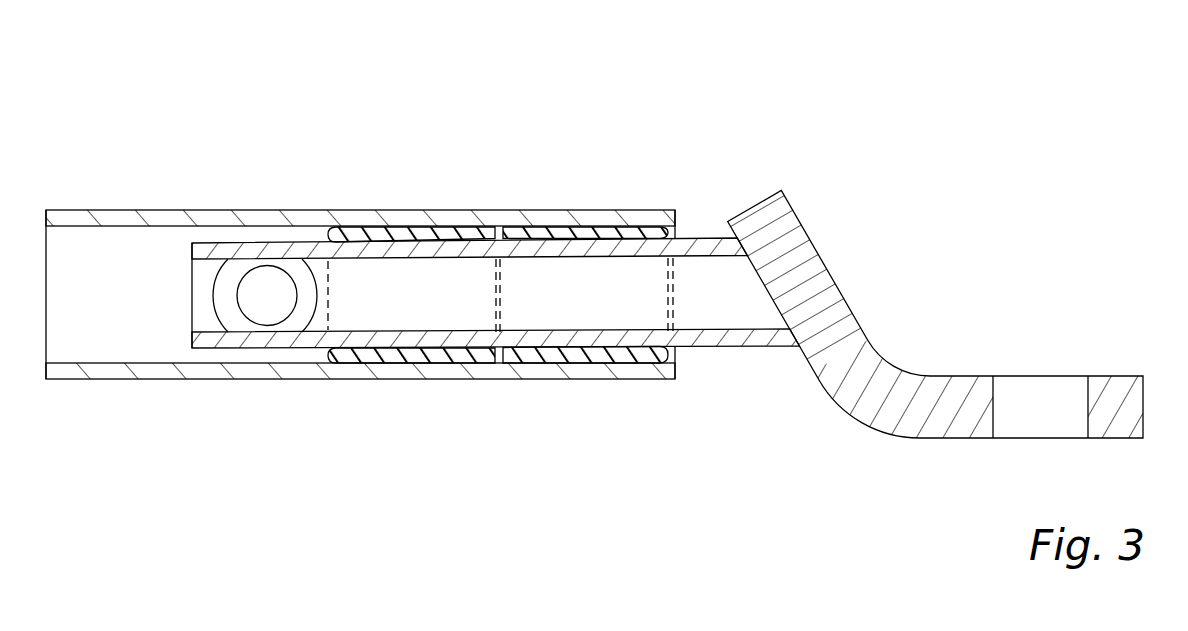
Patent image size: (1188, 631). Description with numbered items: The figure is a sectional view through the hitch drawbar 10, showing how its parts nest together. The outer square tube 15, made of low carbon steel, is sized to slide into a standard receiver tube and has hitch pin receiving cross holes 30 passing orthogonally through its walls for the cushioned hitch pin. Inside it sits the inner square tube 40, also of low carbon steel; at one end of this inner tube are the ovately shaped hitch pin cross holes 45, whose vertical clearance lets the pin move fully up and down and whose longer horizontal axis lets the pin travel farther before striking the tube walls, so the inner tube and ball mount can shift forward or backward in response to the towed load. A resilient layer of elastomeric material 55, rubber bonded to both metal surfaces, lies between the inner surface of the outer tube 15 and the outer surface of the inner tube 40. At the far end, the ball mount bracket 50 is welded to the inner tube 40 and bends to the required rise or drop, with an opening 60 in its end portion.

The hitch drawbar 10 is at (78, 114).
The outer square tube 15 is at (502, 208).
The hitch pin receiving cross holes 30 is at (252, 317).
The inner square tube 40 is at (723, 347).
The hitch pin cross holes 45 is at (317, 287).
The ball mount bracket 50 is at (830, 268).
The elastomeric material 55 is at (397, 230).
The ball mounting hole 60 is at (1042, 400).